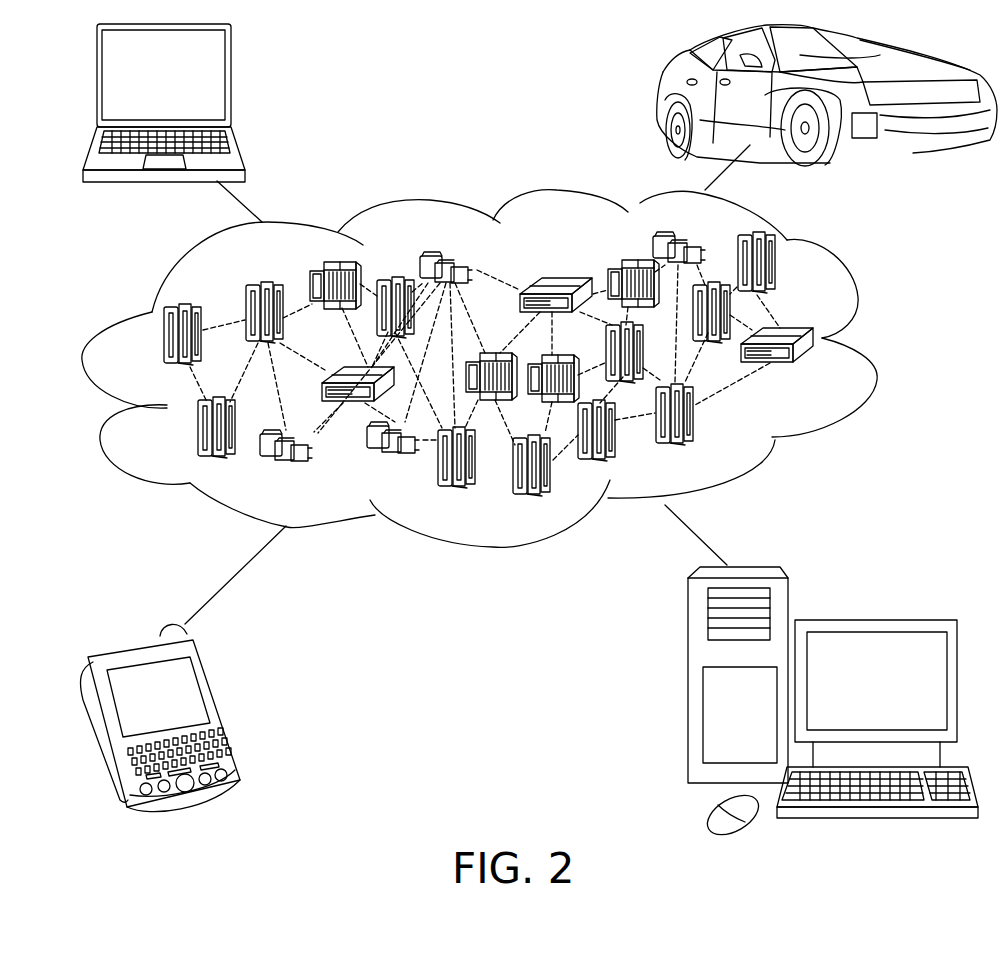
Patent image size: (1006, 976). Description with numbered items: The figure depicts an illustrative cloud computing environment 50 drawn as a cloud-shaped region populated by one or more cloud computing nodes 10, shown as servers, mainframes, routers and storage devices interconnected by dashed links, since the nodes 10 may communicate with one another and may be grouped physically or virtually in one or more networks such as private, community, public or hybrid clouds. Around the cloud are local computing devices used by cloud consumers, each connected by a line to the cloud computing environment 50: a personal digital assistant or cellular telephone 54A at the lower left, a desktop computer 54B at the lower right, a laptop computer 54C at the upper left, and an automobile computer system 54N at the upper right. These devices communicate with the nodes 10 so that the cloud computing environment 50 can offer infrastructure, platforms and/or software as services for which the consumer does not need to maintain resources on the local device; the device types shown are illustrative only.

The cloud computing nodes 10 is at (828, 376).
The cloud computing environment 50 is at (874, 342).
The personal digital assistant or cellular telephone 54A is at (222, 710).
The desktop computer 54B is at (873, 620).
The laptop computer 54C is at (231, 80).
The automobile computer system 54N is at (660, 97).